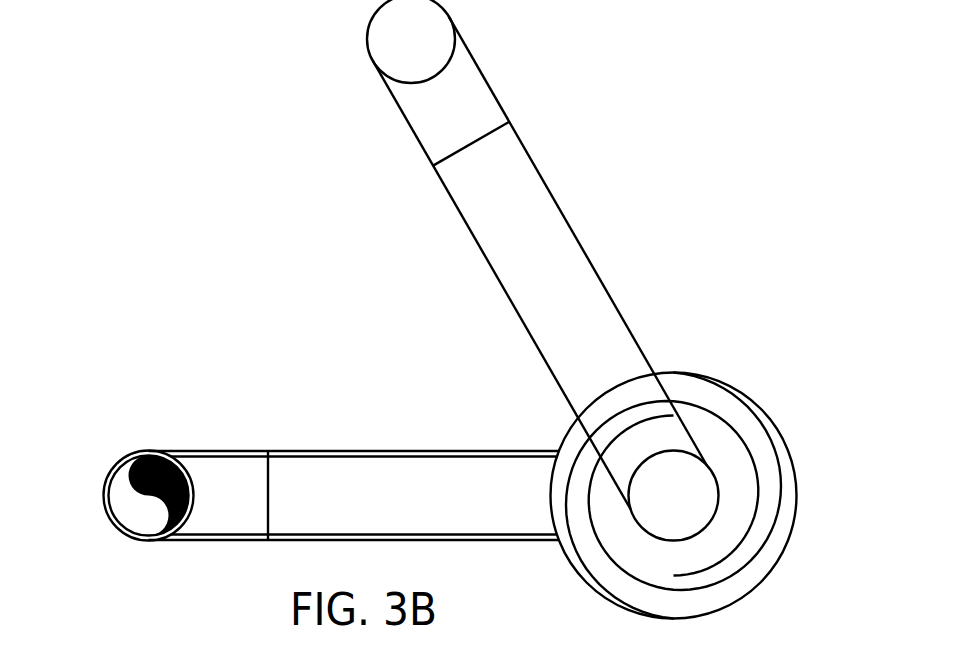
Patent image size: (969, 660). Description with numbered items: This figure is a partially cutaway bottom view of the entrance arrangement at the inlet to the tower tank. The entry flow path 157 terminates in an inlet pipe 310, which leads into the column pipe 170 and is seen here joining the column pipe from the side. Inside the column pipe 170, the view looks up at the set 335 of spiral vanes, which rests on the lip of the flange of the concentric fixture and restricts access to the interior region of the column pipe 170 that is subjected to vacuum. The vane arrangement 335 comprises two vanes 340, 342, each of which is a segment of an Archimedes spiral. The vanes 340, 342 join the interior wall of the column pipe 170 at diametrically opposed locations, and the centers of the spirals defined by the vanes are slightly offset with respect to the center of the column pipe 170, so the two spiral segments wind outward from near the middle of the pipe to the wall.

The entry flow path 157 is at (82, 479).
The inlet pipe 310 is at (317, 450).
The column pipe 170 is at (578, 242).
The set of spiral vanes 335 is at (704, 483).
The vane 340 is at (740, 433).
The vane 342 is at (745, 569).